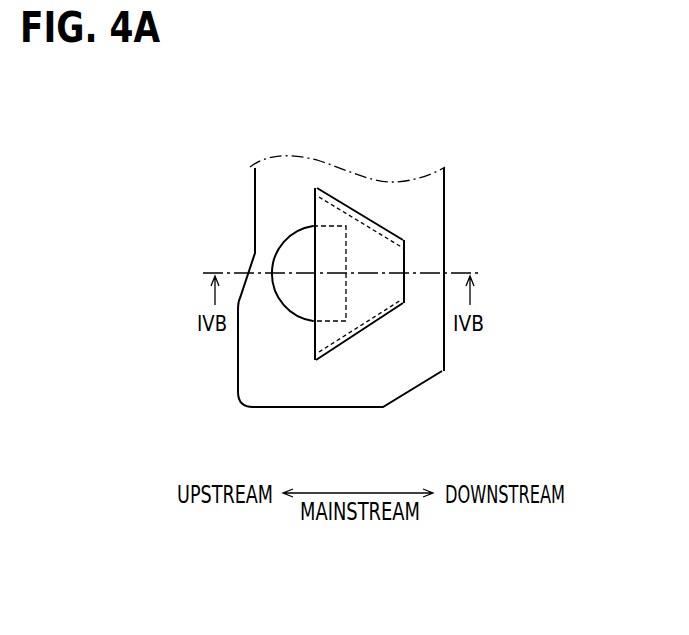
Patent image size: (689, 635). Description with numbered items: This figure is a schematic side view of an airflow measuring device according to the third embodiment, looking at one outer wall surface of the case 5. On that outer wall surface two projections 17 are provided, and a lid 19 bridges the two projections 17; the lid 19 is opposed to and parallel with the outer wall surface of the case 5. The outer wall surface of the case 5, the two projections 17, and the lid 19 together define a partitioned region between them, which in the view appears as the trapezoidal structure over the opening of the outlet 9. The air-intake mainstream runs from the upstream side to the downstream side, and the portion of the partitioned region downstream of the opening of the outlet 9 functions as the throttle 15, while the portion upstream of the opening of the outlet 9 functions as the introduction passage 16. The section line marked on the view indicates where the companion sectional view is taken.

The case 5 is at (472, 104).
The outlet 9 is at (347, 303).
The throttle 15 is at (377, 240).
The introduction passage 16 is at (327, 204).
The projection 17 is at (356, 212).
The lid 19 is at (380, 297).